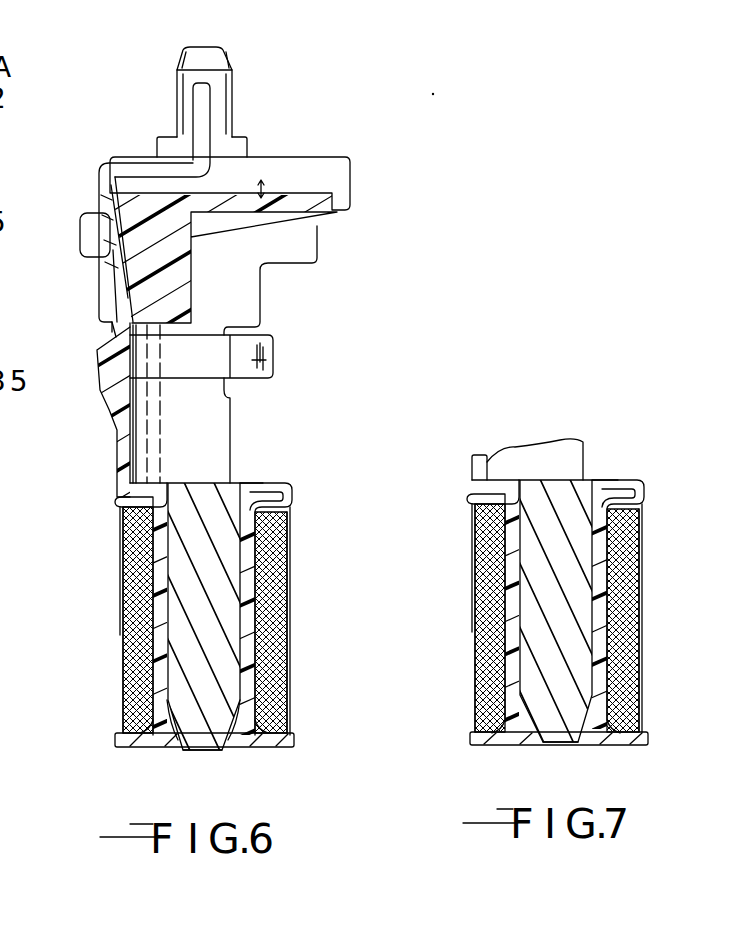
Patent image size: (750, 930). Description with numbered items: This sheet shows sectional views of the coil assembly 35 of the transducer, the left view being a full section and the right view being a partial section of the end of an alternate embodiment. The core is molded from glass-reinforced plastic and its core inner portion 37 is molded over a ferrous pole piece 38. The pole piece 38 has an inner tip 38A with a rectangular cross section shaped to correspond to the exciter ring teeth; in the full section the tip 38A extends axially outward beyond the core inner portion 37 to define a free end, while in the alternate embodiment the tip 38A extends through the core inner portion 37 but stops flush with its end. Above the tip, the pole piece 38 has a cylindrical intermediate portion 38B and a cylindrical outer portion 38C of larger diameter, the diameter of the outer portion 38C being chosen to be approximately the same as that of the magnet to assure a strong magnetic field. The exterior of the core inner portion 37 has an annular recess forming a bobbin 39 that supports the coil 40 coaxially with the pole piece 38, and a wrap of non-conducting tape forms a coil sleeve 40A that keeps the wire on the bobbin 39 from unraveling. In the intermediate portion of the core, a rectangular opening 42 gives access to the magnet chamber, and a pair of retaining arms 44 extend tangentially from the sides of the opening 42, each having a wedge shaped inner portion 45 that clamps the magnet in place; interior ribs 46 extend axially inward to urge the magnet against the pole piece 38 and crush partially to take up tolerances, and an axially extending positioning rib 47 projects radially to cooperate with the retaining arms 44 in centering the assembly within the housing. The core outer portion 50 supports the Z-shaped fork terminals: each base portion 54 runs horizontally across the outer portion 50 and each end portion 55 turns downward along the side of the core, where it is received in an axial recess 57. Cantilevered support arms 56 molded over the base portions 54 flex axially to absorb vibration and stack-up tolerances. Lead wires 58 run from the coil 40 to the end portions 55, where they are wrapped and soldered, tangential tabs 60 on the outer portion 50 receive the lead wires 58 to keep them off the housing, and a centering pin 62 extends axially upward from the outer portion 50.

In FIG. 6, the coil assembly 35 is at (303, 413).
In FIG. 6, the core inner portion 37 is at (250, 582).
In FIG. 7, the core inner portion 37 is at (602, 580).
In FIG. 6, the pole piece 38 is at (232, 548).
In FIG. 7, the pole piece 38 is at (580, 545).
In FIG. 6, the inner tip 38A is at (220, 750).
In FIG. 7, the inner tip 38A is at (565, 745).
In FIG. 6, the intermediate portion 38B is at (180, 557).
In FIG. 7, the intermediate portion 38B is at (530, 560).
In FIG. 6, the outer portion 38C is at (262, 492).
In FIG. 7, the outer portion 38C is at (612, 490).
In FIG. 6, the bobbin 39 is at (290, 657).
In FIG. 7, the bobbin 39 is at (650, 655).
In FIG. 6, the coil 40 is at (272, 598).
In FIG. 7, the coil 40 is at (634, 600).
In FIG. 6, the coil sleeve 40A is at (122, 535).
In FIG. 7, the coil sleeve 40A is at (475, 533).
In FIG. 6, the opening 42 is at (303, 326).
In FIG. 6, the retaining arms 44 is at (257, 333).
In FIG. 6, the wedge shaped inner portion 45 is at (268, 356).
In FIG. 6, the interior ribs 46 is at (222, 238).
In FIG. 6, the positioning rib 47 is at (95, 363).
In FIG. 6, the core outer portion 50 is at (17, 170).
In FIG. 6, the base portion 54 is at (128, 172).
In FIG. 6, the end portion 55 is at (93, 193).
In FIG. 6, the cantilevered support arms 56 is at (231, 165).
In FIG. 6, the axial recesses 57 is at (112, 247).
In FIG. 6, the lead wires 58 is at (98, 300).
In FIG. 6, the tangential tabs 60 is at (87, 232).
In FIG. 6, the centering pin 62 is at (223, 58).